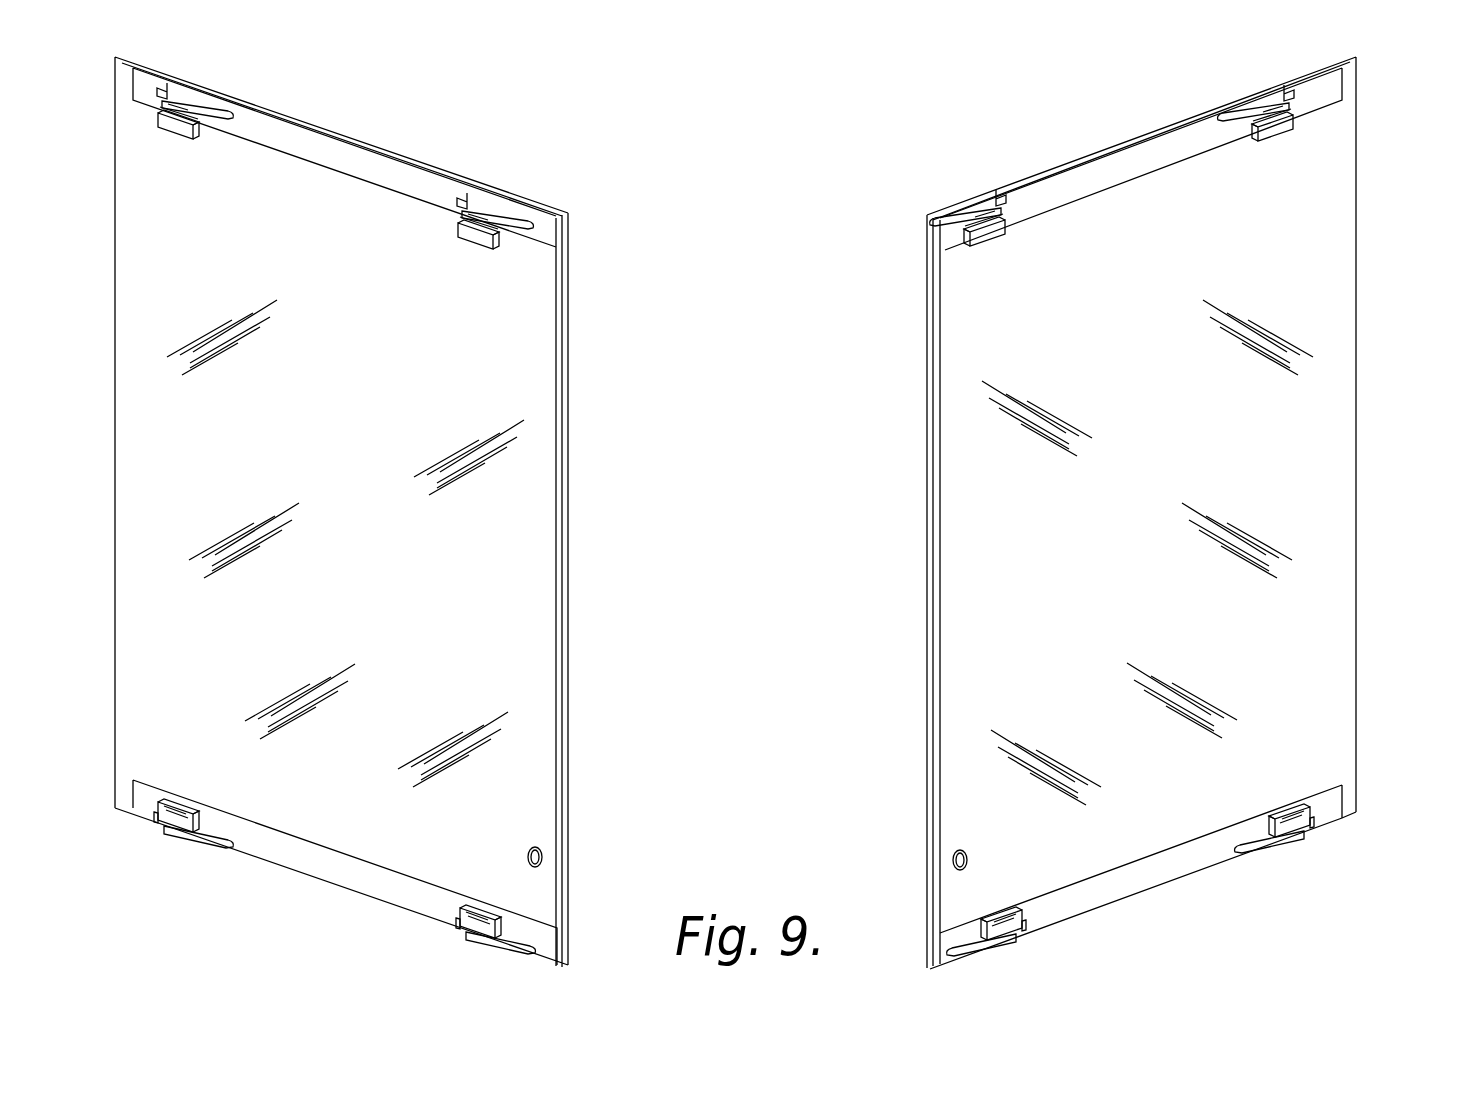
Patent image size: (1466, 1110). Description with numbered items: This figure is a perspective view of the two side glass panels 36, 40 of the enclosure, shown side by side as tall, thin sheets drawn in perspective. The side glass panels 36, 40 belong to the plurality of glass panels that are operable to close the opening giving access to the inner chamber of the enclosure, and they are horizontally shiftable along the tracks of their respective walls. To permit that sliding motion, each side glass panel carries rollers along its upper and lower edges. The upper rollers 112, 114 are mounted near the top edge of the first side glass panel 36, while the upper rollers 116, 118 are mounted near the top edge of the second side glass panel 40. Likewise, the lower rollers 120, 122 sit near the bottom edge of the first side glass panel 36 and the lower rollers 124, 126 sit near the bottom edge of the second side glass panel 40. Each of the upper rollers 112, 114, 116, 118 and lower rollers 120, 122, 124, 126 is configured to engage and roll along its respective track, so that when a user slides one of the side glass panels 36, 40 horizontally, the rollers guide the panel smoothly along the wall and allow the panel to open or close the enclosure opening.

The side glass panel 36 is at (538, 518).
The side glass panel 40 is at (1317, 421).
The upper roller 112 is at (497, 250).
The upper roller 114 is at (198, 135).
The upper roller 116 is at (990, 248).
The upper roller 118 is at (1278, 142).
The lower roller 120 is at (503, 916).
The lower roller 122 is at (190, 806).
The lower roller 124 is at (995, 922).
The lower roller 126 is at (1280, 815).